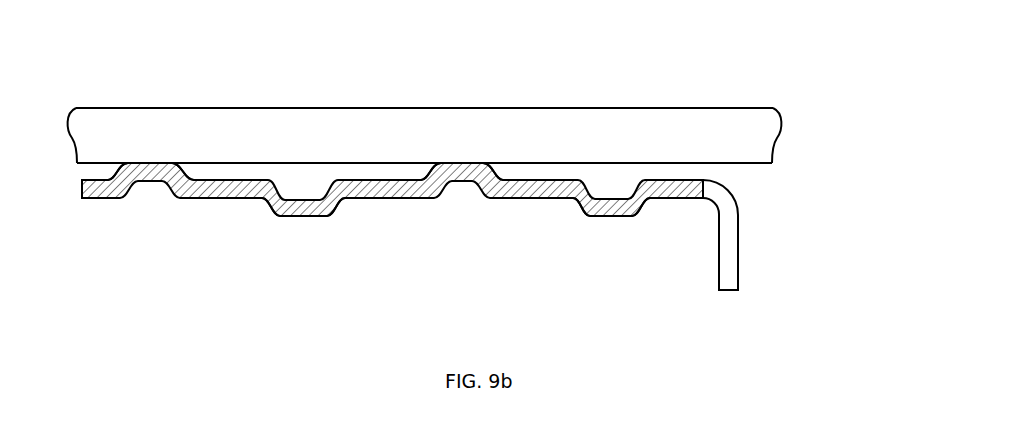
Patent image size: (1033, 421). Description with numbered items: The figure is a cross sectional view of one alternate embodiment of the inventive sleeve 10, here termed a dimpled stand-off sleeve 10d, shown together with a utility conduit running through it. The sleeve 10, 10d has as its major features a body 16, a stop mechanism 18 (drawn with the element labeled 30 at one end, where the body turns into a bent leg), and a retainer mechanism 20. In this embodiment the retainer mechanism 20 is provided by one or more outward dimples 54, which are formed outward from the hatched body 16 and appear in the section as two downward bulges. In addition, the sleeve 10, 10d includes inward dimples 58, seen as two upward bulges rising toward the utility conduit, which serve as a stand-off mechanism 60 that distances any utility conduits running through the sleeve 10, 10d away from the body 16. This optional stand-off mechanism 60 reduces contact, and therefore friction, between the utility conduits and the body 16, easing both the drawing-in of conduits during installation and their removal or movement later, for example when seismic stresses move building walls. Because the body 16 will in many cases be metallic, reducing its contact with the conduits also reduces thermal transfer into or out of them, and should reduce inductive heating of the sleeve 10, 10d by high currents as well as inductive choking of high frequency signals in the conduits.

The sleeve 10 is at (467, 160).
The dimpled stand-off sleeve 10d is at (467, 160).
The body 16 is at (200, 198).
The stand-off mechanism 60 is at (300, 211).
The inward dimples 58 is at (150, 181).
The retainer mechanism 20 is at (456, 252).
The outward dimples 54 is at (302, 216).
The stop mechanism 18 is at (778, 235).
The flange 30 is at (738, 247).